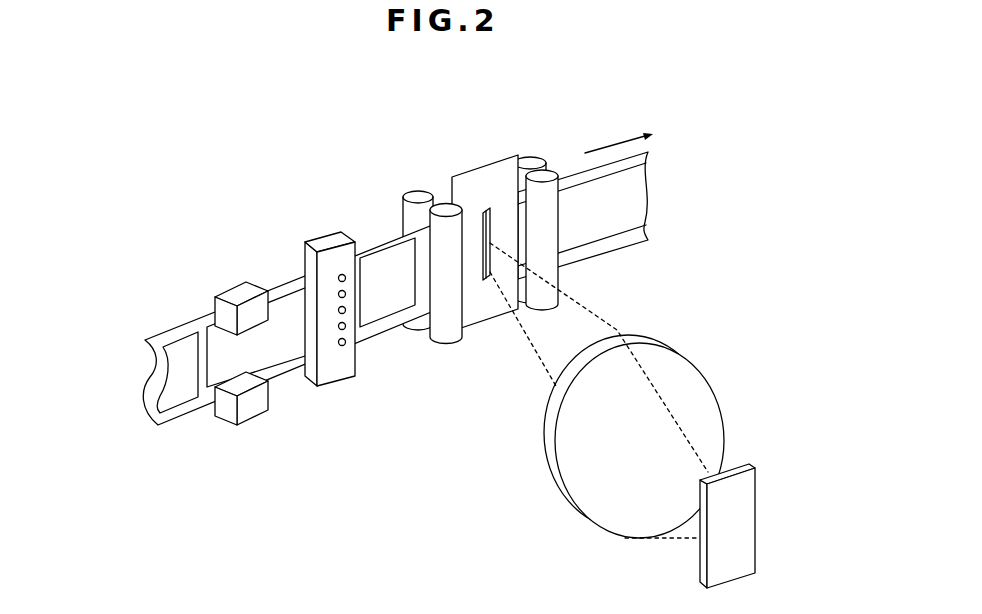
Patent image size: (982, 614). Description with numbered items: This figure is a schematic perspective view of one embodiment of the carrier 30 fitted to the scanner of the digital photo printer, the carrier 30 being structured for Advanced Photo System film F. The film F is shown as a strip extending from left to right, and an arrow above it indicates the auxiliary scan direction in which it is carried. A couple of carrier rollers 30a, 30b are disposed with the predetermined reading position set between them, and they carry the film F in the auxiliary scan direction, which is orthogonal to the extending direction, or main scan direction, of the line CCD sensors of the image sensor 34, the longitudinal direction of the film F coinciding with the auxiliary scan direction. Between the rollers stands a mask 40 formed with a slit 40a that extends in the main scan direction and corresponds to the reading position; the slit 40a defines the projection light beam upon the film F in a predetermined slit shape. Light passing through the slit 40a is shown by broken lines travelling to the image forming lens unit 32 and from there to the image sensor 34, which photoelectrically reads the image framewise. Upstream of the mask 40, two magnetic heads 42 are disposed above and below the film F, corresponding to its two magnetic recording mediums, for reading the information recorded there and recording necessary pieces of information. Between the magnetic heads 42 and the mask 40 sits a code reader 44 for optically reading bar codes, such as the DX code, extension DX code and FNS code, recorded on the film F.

The film F is at (172, 338).
The carrier 30 is at (422, 156).
The carrier roller 30a is at (443, 332).
The carrier roller 30b is at (542, 247).
The image forming lens unit 32 is at (680, 377).
The image sensor 34 is at (738, 518).
The mask 40 is at (485, 306).
The slit 40a is at (487, 208).
The magnetic heads 42 is at (238, 293).
The code reader 44 is at (323, 243).